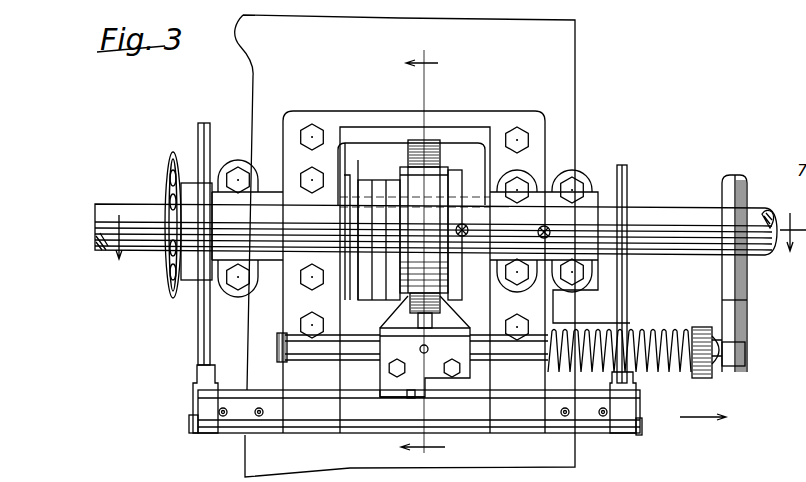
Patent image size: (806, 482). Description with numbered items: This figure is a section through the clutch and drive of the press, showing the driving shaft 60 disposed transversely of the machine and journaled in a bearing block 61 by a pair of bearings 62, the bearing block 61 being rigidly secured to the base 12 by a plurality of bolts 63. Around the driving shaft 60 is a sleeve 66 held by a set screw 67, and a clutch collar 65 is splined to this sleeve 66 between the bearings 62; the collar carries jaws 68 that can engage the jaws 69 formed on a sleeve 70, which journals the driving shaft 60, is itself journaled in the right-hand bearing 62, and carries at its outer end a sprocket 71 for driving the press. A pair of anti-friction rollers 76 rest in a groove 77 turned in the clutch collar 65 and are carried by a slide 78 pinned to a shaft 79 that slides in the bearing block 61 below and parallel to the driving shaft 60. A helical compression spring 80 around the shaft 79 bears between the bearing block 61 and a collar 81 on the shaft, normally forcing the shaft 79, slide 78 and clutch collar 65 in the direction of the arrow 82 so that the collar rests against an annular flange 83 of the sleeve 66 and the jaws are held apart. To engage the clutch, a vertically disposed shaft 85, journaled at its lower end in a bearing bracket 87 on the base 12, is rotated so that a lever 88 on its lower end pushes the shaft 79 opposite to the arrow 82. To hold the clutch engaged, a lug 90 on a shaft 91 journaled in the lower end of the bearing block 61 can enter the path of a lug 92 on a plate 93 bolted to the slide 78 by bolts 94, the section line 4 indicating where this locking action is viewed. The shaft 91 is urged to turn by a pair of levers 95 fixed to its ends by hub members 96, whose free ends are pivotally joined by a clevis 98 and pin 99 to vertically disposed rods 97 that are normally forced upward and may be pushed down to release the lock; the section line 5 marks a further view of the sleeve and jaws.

The base 12 is at (576, 92).
The bearing block 61 is at (548, 124).
The bearings 62 is at (253, 203).
The bolts 63 is at (314, 130).
The set screw 67 is at (468, 229).
The driving shaft 60 is at (103, 222).
The section line 5 is at (461, 243).
The sprocket 71 is at (169, 158).
The vertically disposed rods 97 is at (200, 326).
The vertically disposed shaft 85 is at (735, 192).
The lower bearing bracket 87 is at (748, 298).
The clevis 98 is at (205, 387).
The pin 99 is at (190, 424).
The levers 95 is at (233, 415).
The hub members 96 is at (258, 420).
The shaft 79 is at (704, 330).
The helical compression spring 80 is at (625, 335).
The collar 81 is at (700, 378).
The lever 88 is at (748, 355).
The arrow 82 is at (702, 422).
The plate 93 is at (440, 377).
The bolts 94 is at (395, 358).
The slide 78 is at (452, 322).
The clutch collar 65 is at (432, 140).
The annular flange 83 is at (457, 172).
The sleeve 66 is at (348, 185).
The sleeve 70 is at (344, 190).
The jaws 69 is at (300, 222).
The jaws 68 is at (372, 255).
The groove 77 is at (413, 220).
The anti-friction rollers 76 is at (408, 178).
The section line 4 is at (414, 252).
The lug 90 is at (412, 398).
The lug 92 is at (392, 400).
The shaft 91 is at (396, 402).